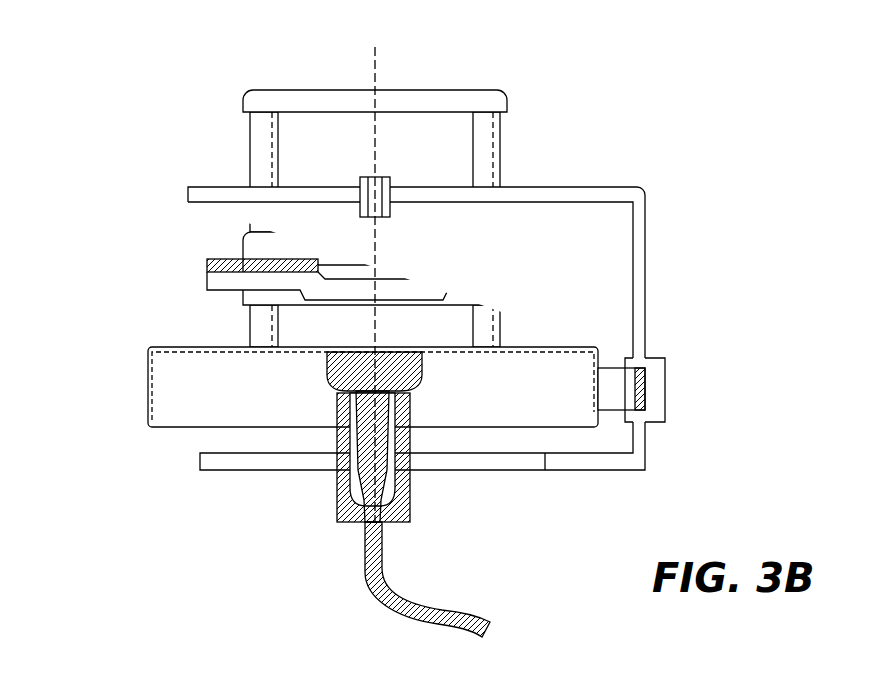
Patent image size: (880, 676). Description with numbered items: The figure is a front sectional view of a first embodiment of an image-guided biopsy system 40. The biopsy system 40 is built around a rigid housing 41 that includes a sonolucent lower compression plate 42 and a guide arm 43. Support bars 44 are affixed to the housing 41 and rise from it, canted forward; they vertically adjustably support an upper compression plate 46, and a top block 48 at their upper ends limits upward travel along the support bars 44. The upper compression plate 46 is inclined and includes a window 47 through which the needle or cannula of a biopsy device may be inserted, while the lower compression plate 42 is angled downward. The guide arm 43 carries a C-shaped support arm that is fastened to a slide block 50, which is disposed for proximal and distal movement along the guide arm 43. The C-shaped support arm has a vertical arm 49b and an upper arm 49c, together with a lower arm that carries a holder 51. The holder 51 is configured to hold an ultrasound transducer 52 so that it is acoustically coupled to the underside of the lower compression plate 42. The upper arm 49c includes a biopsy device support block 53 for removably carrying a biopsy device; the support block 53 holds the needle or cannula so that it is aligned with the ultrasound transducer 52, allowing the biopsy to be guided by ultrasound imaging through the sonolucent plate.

The image-guided biopsy system 40 is at (110, 156).
The rigid housing 41 is at (148, 393).
The sonolucent lower compression plate 42 is at (300, 347).
The guide arm 43 is at (620, 380).
The support bars 44 is at (250, 132).
The upper compression plate 46 is at (207, 282).
The window 47 is at (348, 272).
The top block 48 is at (458, 100).
The vertical arm 49b is at (638, 237).
The upper arm 49c is at (597, 193).
The slide block 50 is at (667, 368).
The holder 51 is at (412, 513).
The ultrasound transducer 52 is at (327, 372).
The biopsy device support block 53 is at (360, 180).